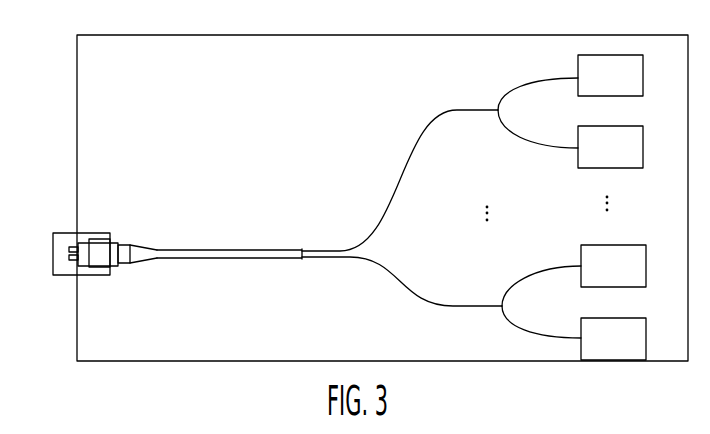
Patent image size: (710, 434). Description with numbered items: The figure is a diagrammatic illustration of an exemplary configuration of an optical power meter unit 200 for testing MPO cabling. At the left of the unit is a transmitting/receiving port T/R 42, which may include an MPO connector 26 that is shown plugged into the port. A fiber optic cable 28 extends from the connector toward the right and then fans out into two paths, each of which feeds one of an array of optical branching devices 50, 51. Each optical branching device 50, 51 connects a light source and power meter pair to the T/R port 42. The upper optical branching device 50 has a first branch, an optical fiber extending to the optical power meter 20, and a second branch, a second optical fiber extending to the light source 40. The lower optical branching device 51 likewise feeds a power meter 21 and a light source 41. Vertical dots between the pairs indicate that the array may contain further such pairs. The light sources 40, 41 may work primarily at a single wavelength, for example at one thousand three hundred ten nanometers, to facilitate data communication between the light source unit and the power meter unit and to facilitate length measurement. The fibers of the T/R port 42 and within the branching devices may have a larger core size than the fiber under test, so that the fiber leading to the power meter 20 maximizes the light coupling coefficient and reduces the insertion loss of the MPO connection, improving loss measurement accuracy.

The optical power meter unit 200 is at (435, 35).
The transmitting/receiving port 42 is at (60, 276).
The MPO connector 26 is at (103, 248).
The fiber optic cable 28 is at (243, 251).
The optical branching device 50 is at (519, 114).
The optical branching device 51 is at (526, 299).
The optical power meter 20 is at (644, 75).
The light source 40 is at (644, 145).
The third optical device 21 is at (647, 265).
The light source 41 is at (647, 338).